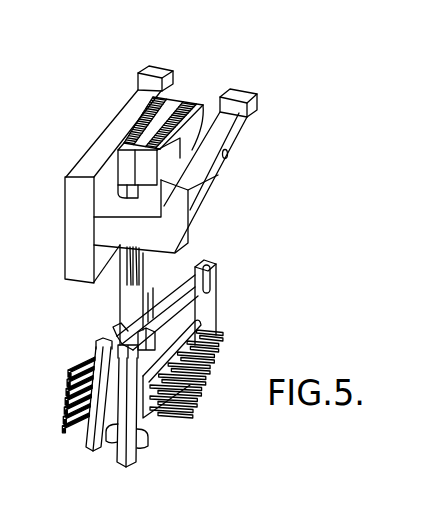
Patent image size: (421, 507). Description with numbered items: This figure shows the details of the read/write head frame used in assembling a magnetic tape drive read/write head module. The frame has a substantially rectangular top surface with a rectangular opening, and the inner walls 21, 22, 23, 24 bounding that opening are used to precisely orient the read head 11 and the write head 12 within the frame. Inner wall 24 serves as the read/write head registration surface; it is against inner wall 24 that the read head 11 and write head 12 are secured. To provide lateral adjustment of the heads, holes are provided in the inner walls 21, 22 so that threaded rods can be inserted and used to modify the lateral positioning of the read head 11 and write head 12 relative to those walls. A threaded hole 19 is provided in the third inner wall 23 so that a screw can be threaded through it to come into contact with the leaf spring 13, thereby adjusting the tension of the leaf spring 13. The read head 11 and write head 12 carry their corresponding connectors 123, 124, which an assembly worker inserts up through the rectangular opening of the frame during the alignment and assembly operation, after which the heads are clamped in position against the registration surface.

The read head 11 is at (185, 95).
The write head 12 is at (196, 100).
The leaf spring 13 is at (183, 158).
The threaded hole 19 is at (230, 155).
The inner wall 21 is at (142, 215).
The inner wall 22 is at (220, 90).
The third inner wall 23 is at (218, 140).
The inner wall 24 is at (97, 146).
The connector 123 is at (98, 341).
The connector 124 is at (217, 299).